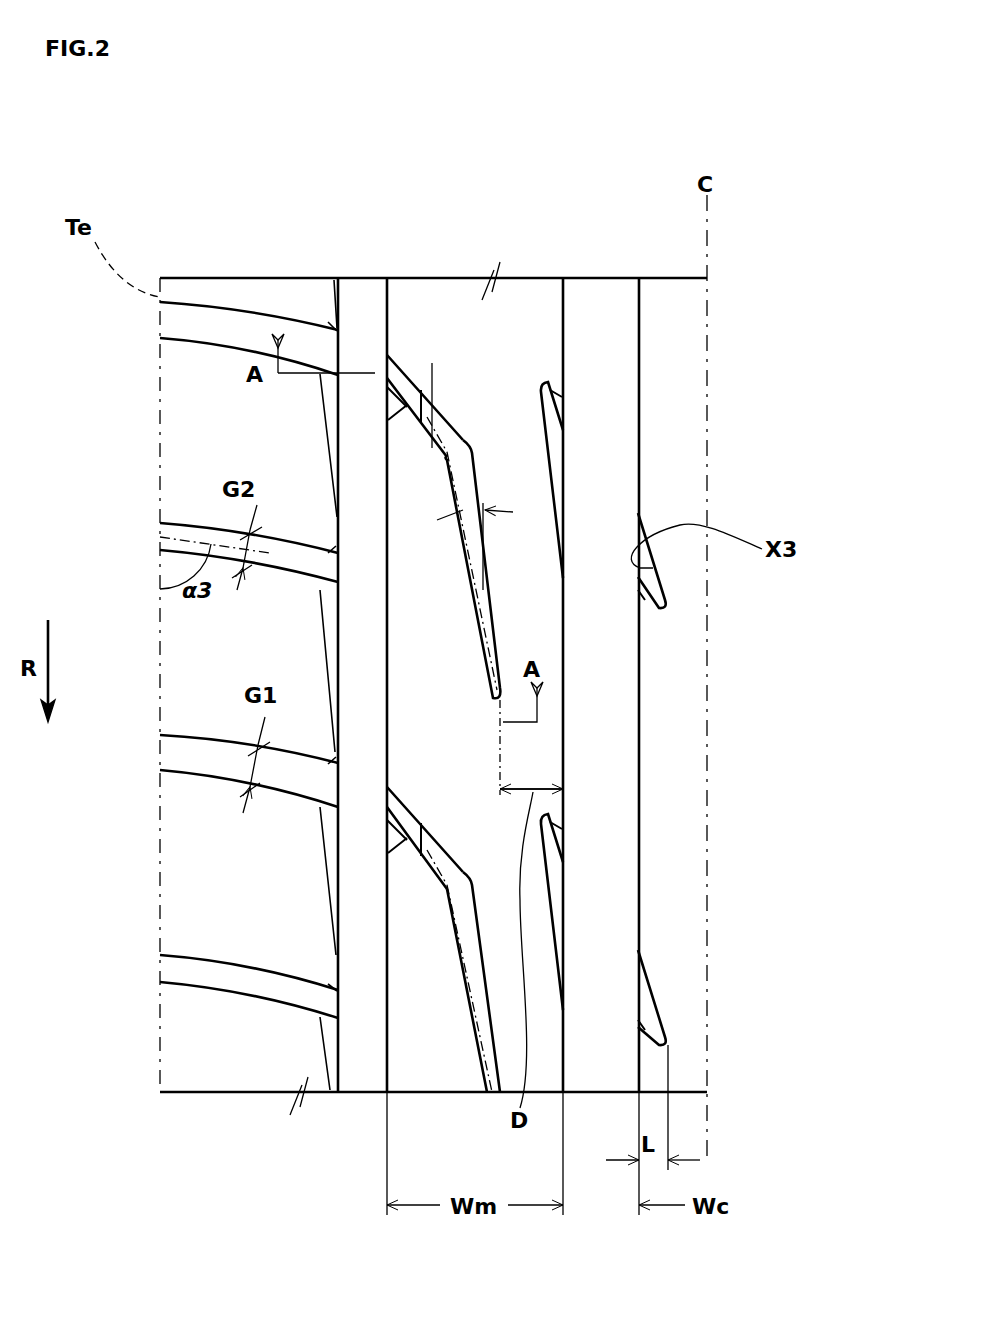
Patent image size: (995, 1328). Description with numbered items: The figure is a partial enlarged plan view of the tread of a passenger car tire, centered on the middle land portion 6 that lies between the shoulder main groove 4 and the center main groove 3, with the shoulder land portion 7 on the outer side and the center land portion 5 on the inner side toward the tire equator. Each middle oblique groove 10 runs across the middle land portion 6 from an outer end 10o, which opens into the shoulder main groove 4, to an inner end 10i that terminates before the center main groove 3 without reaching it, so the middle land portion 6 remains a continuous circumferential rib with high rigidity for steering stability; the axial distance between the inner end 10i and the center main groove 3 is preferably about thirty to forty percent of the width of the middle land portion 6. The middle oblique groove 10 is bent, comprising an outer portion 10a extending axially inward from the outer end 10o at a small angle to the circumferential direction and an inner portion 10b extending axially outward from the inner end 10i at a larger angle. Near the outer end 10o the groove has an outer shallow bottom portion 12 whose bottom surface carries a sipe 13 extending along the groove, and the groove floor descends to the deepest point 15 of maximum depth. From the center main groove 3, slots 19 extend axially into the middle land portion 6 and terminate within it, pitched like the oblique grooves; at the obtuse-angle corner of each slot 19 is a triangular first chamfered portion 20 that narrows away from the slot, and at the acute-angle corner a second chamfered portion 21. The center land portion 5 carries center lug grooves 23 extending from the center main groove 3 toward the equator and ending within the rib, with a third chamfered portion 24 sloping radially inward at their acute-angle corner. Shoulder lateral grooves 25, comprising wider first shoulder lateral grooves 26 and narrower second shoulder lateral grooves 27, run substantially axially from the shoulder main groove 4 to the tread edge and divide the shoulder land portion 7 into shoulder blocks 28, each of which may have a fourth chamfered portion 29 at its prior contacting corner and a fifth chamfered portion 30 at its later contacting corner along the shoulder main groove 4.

The center main groove 3 is at (603, 297).
The shoulder main groove 4 is at (370, 292).
The center land portion 5 is at (673, 297).
The middle land portion 6 is at (455, 292).
The shoulder land portion 7 is at (228, 292).
The middle oblique groove 10 is at (777, 350).
The outer portion 10a is at (445, 417).
The inner portion 10b is at (495, 605).
The outer end 10o is at (387, 363).
The inner end 10i is at (393, 830).
The outer shallow bottom portion 12 is at (417, 410).
The sipe 13 is at (433, 382).
The deepest point 15 is at (443, 453).
The slot 19 is at (567, 841).
The first chamfered portion 20 is at (553, 898).
The second chamfered portion 21 is at (563, 812).
The center lug groove 23 is at (650, 568).
The third chamfered portion 24 is at (640, 592).
The shoulder lateral groove 25 is at (97, 487).
The first shoulder lateral groove 26 is at (197, 323).
The second shoulder lateral groove 27 is at (190, 530).
The shoulder block 28 is at (188, 445).
The fourth chamfered portion 29 is at (338, 988).
The fifth chamfered portion 30 is at (330, 828).